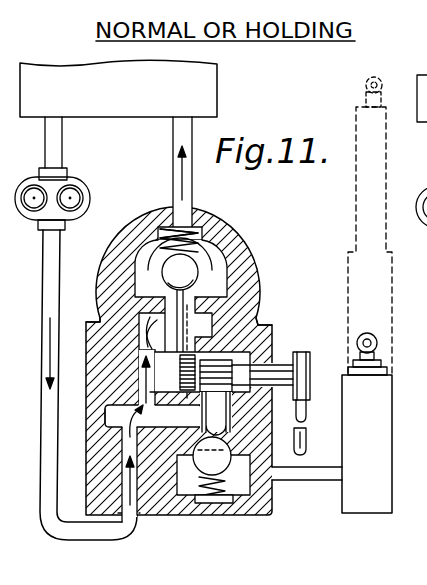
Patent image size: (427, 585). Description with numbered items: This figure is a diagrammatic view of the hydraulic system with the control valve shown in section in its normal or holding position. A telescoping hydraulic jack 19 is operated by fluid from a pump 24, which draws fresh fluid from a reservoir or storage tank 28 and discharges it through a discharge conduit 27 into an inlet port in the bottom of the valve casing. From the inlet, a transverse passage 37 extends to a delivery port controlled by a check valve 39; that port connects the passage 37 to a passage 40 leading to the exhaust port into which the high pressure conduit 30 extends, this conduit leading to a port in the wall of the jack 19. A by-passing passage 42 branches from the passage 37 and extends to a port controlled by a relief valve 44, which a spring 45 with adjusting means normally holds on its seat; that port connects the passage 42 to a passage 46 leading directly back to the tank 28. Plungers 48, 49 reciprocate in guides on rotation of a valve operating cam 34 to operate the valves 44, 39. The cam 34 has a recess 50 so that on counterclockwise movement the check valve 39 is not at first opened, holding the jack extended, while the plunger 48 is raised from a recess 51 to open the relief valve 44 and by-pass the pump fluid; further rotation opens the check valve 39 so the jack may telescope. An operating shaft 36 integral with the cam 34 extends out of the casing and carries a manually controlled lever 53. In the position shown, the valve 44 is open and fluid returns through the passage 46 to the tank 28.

The telescoping hydraulic jack 19 is at (382, 429).
The pump 24 is at (68, 183).
The discharge conduit 27 is at (73, 528).
The reservoir or storage tank 28 is at (217, 89).
The high pressure conduit 30 is at (336, 482).
The valve operating cam 34 is at (266, 322).
The operating shaft 36 is at (275, 348).
The transverse passage 37 is at (107, 412).
The check valve 39 is at (171, 506).
The passage 40 is at (238, 490).
The by-passing passage 42 is at (100, 318).
The relief valve 44 is at (200, 272).
The spring 45 is at (228, 242).
The passage 46 is at (178, 137).
The plunger 48 is at (205, 300).
The plunger 49 is at (237, 420).
The recess 50 is at (199, 416).
The recess 51 is at (184, 374).
The lever 53 is at (306, 440).